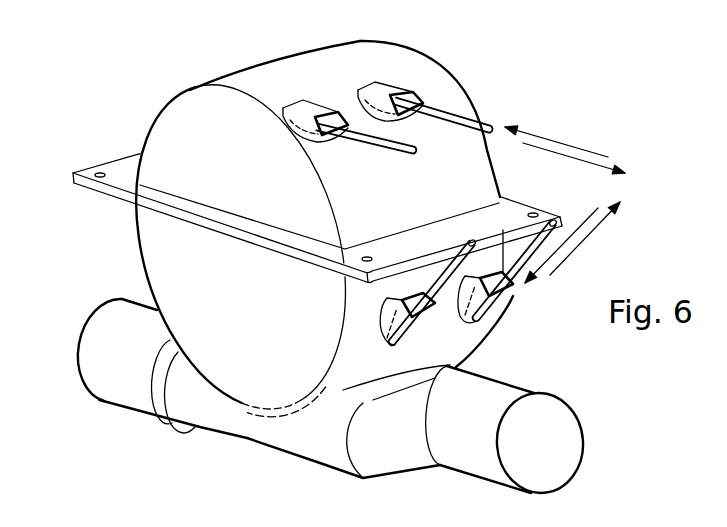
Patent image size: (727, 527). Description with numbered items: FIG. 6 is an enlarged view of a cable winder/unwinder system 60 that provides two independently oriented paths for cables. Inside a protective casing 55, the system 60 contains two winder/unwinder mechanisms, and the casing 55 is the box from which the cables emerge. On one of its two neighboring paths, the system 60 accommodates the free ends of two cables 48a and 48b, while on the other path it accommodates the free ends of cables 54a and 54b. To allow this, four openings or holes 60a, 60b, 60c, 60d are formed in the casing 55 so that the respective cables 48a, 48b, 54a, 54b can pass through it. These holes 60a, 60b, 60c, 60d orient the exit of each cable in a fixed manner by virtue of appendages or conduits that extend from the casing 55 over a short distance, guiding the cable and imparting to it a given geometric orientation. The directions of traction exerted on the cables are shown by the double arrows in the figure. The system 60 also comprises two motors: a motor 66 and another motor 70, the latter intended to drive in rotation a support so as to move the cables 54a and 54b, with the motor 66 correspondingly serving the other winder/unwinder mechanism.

The cable winder/unwinder system 60 is at (74, 154).
The protective casing 55 is at (143, 249).
The opening or hole 60a is at (380, 296).
The opening or hole 60b is at (334, 113).
The opening or hole 60c is at (517, 281).
The opening or hole 60d is at (407, 90).
The cable 48a is at (445, 272).
The cable 48b is at (375, 144).
The cable 54a is at (547, 244).
The cable 54b is at (487, 124).
The motor 66 is at (553, 467).
The motor 70 is at (90, 355).